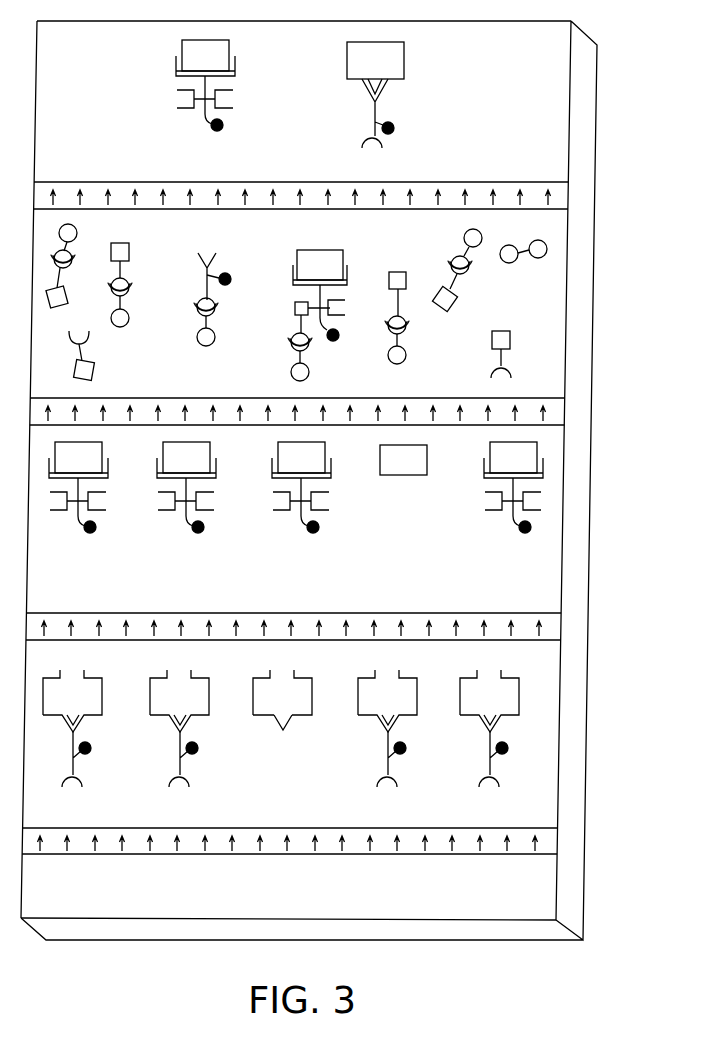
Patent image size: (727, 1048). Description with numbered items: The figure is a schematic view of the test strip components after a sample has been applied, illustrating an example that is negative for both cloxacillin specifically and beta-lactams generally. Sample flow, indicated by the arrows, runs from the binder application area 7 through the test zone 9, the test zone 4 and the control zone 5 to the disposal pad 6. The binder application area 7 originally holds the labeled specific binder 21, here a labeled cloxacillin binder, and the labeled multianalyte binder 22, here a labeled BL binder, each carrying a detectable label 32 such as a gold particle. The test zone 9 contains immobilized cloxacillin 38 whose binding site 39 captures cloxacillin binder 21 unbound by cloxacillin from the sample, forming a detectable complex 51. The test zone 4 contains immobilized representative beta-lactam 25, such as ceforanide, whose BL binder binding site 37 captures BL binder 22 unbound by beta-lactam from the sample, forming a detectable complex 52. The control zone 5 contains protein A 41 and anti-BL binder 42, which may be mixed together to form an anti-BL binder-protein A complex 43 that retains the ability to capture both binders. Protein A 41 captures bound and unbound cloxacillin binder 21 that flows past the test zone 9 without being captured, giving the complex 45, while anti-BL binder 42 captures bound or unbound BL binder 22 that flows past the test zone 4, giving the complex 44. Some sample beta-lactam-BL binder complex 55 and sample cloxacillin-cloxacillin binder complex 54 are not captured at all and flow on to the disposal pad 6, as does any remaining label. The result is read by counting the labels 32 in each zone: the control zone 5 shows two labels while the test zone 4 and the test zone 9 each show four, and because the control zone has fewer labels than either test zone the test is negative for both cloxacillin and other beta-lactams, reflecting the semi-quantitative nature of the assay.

The test zone 4 is at (600, 432).
The control zone 5 is at (600, 215).
The disposal pad 6 is at (602, 47).
The binder application area 7 is at (590, 853).
The test zone 9 is at (600, 648).
The labeled specific binder 21 is at (226, 252).
The labeled multianalyte binder 22 is at (292, 265).
The immobilized representative beta-lactam 25 is at (430, 496).
The detectable label 32 is at (322, 552).
The BL binder binding site 37 is at (402, 493).
The immobilized cloxacillin 38 is at (305, 668).
The binding site 39 is at (283, 730).
The protein A 41 is at (556, 262).
The anti-BL binder 42 is at (485, 328).
The anti-BL binder-protein A complex 43 is at (465, 220).
The complex 44 is at (343, 245).
The complex 45 is at (197, 248).
The complex 51 is at (100, 668).
The complex 52 is at (105, 443).
The sample cloxacillin-cloxacillin binder complex 54 is at (412, 42).
The sample beta-lactam-BL binder complex 55 is at (173, 42).